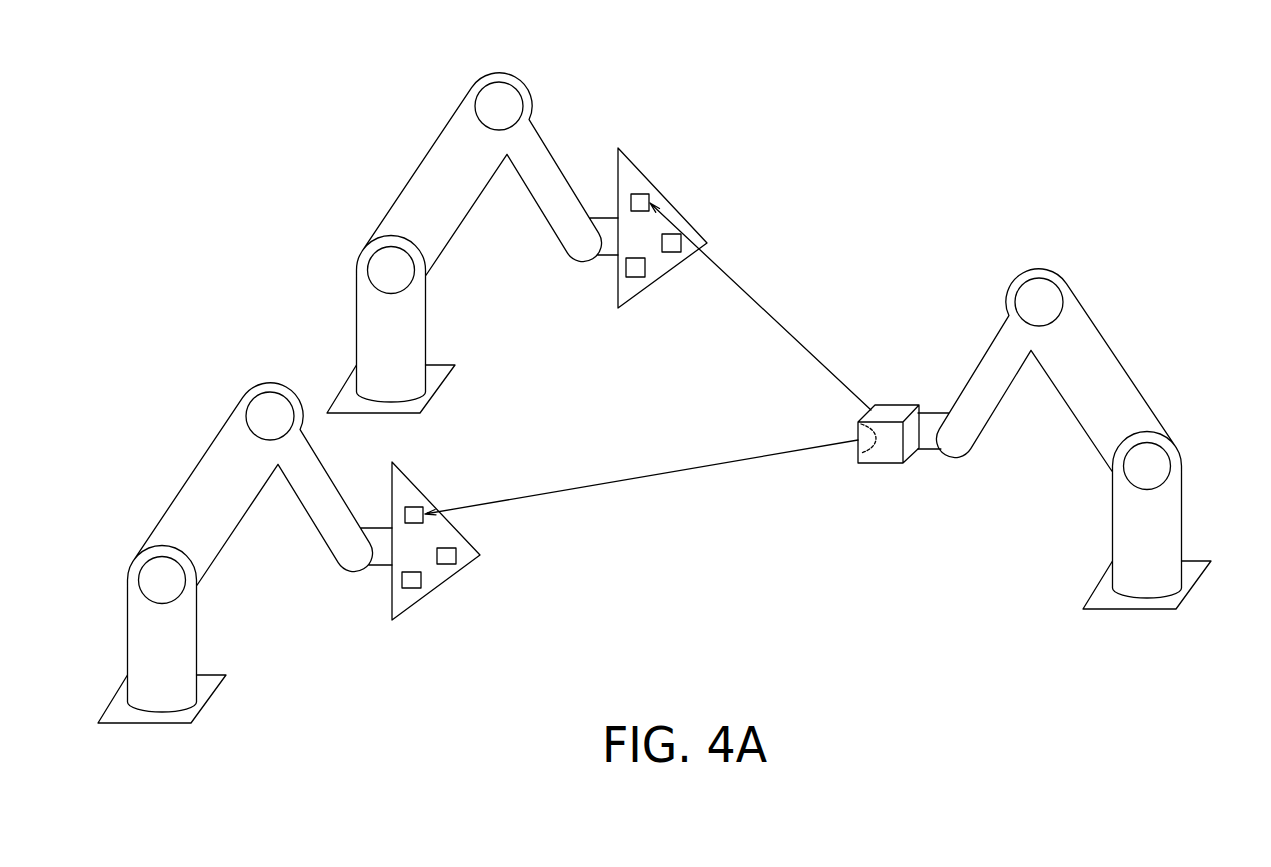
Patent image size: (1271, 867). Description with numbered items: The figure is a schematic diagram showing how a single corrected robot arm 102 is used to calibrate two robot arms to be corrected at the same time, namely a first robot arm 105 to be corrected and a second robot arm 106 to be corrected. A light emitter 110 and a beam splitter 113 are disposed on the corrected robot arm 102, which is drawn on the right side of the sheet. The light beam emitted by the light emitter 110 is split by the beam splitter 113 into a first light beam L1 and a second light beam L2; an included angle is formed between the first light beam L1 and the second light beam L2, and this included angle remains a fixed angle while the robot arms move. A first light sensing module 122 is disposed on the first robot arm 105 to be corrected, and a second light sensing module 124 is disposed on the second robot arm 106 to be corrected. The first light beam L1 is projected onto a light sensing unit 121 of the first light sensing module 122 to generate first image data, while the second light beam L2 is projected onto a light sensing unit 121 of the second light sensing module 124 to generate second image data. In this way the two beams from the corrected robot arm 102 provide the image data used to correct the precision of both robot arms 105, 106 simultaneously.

The corrected robot arm 102 is at (1165, 290).
The first robot arm to be corrected 105 is at (148, 425).
The second robot arm to be corrected 106 is at (389, 126).
The light emitter 110 is at (897, 404).
The beam splitter 113 is at (858, 430).
The light sensing unit 121 is at (640, 193).
The first light sensing module 122 is at (451, 604).
The second light sensing module 124 is at (673, 302).
The first light beam L1 is at (641, 477).
The second light beam L2 is at (760, 306).